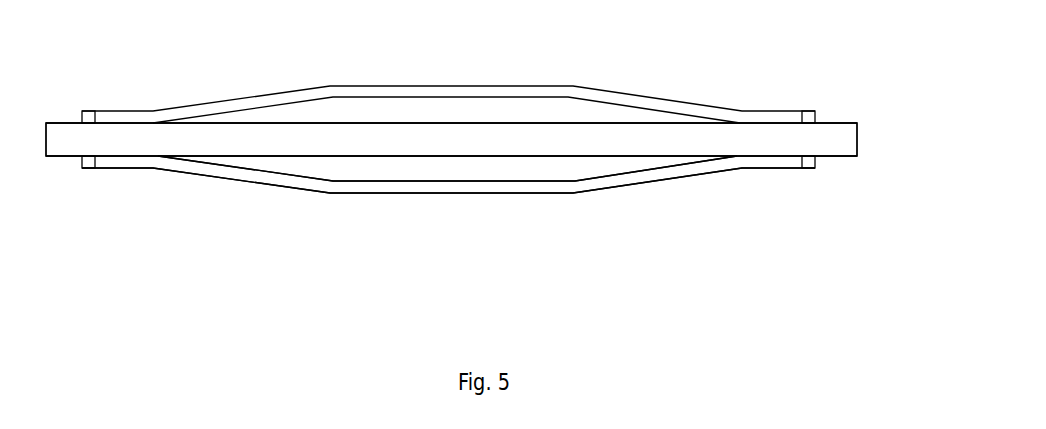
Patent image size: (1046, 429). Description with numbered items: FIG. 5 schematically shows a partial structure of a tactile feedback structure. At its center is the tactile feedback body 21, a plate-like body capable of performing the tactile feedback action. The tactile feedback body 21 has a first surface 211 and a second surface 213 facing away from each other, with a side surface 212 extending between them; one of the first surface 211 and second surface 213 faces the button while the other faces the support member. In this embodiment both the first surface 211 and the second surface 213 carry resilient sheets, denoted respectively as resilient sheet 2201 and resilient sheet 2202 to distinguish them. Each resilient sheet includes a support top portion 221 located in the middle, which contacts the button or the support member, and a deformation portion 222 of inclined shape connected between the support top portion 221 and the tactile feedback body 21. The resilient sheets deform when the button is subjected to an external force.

The tactile feedback body 21 is at (827, 143).
The first surface 211 is at (475, 123).
The side surface 212 is at (363, 143).
The second surface 213 is at (523, 156).
The resilient sheet 2201 is at (638, 102).
The resilient sheet 2202 is at (735, 163).
The support top portion 221 is at (476, 183).
The deformation portion 222 is at (680, 167).